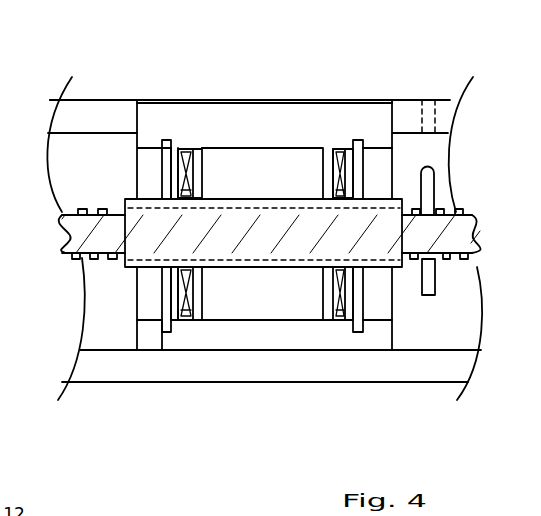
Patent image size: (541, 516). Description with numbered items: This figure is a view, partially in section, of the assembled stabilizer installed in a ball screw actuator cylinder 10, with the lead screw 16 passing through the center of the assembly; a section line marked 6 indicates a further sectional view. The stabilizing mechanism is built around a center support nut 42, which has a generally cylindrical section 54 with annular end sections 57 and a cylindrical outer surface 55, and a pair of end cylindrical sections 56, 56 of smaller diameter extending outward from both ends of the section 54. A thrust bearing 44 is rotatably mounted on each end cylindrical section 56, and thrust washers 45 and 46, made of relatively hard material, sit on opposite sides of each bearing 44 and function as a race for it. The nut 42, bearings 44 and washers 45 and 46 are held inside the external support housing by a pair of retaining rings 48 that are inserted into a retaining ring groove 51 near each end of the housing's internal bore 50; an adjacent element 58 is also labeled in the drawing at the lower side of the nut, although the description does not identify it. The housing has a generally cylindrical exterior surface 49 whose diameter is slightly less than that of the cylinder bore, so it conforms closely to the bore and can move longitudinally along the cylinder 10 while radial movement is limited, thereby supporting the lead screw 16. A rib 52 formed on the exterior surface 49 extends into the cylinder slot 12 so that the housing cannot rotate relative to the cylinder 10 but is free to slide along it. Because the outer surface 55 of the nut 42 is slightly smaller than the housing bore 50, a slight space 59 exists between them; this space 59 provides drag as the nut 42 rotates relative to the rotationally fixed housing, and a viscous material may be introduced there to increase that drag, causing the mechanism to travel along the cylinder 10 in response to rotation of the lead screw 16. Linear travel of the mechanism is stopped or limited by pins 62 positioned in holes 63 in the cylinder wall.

The cylinder 10 is at (377, 370).
The cylinder slot 12 is at (383, 100).
The lead screw 16 is at (77, 258).
The center support nut 42 is at (230, 100).
The thrust bearings 44 is at (190, 152).
The thrust washer 45 is at (228, 170).
The thrust washer 46 is at (167, 147).
The retaining rings 48 is at (163, 170).
The exterior cylindrical surface 49 is at (147, 333).
The internal bore 50 is at (258, 320).
The retaining ring groove 51 is at (167, 333).
The rib 52 is at (357, 107).
The cylindrical section 54 is at (283, 305).
The cylindrical outer surface 55 is at (307, 150).
The end cylindrical sections 56 is at (132, 268).
The annular end sections 57 is at (325, 312).
The lower spacer 58 is at (206, 258).
The space 59 is at (273, 148).
The pins 62 is at (428, 190).
The holes 63 is at (433, 113).
The section line 6 is at (278, 485).